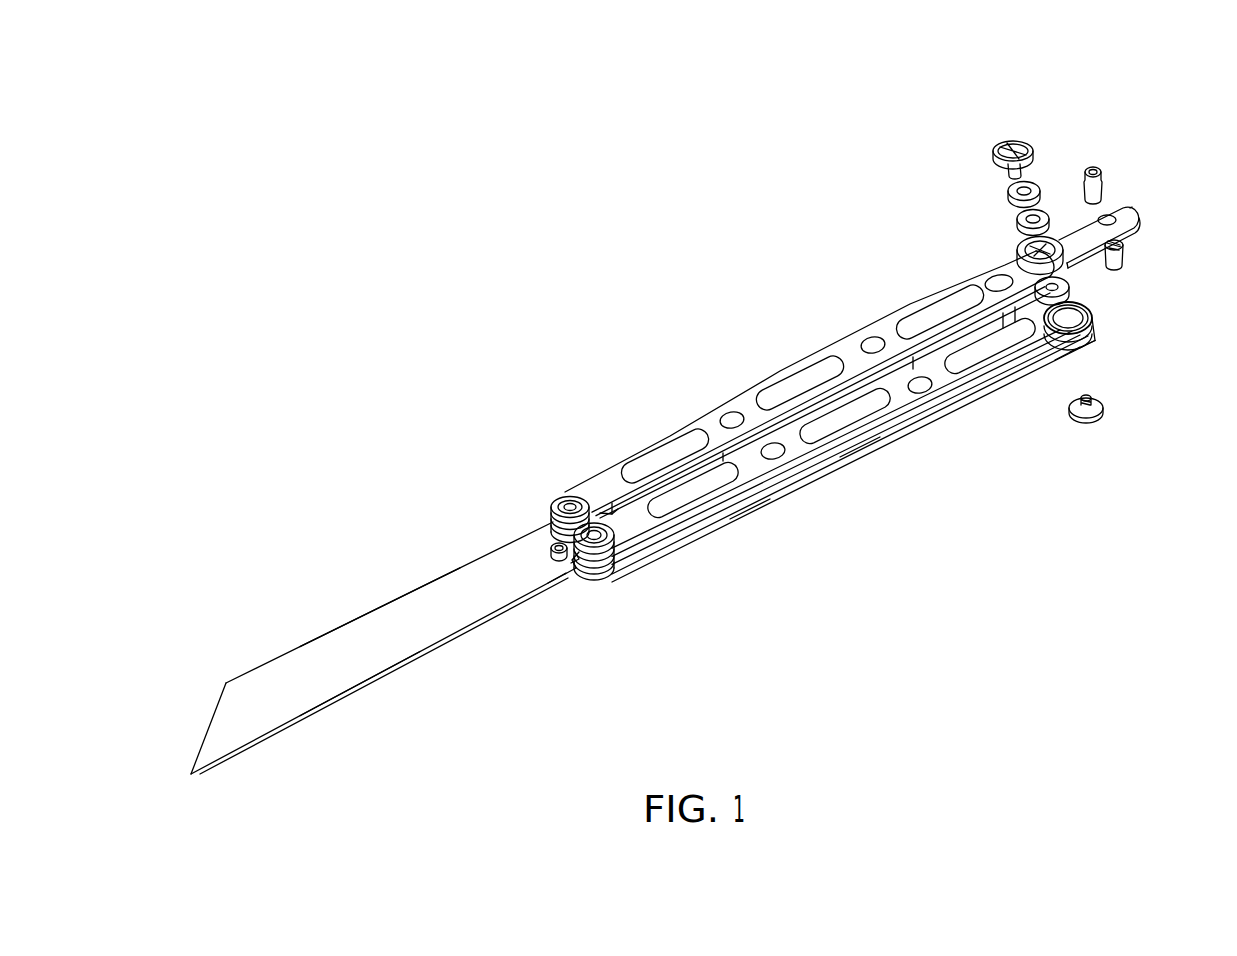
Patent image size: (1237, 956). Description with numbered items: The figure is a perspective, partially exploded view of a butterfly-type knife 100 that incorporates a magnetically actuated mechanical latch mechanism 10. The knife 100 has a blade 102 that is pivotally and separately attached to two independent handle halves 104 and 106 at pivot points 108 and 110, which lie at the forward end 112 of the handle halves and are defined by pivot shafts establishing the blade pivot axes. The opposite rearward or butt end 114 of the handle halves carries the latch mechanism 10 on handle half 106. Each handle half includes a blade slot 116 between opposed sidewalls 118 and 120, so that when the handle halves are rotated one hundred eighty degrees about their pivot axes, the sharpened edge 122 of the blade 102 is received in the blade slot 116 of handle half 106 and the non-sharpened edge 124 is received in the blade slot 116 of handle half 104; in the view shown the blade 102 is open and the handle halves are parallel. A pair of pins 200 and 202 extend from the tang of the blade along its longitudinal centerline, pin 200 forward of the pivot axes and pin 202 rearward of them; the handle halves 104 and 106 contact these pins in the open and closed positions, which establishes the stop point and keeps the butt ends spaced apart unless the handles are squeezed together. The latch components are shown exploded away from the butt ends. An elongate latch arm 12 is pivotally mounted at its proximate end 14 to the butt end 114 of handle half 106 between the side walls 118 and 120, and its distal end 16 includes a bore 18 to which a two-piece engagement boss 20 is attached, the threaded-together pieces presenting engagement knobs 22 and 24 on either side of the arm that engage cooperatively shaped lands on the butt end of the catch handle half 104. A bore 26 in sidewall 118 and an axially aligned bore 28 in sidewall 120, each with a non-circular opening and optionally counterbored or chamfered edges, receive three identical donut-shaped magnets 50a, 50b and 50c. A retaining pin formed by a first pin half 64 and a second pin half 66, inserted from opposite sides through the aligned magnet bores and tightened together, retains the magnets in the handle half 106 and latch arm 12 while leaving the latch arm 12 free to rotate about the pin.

The magnetically actuated mechanical latch mechanism 10 is at (1012, 113).
The elongate latch arm 12 is at (1068, 233).
The proximate end 14 is at (1018, 254).
The distal end 16 is at (1138, 211).
The bore 18 is at (1112, 212).
The two piece engagement boss 20 is at (1091, 152).
The engagement knob 22 is at (1128, 266).
The engagement knob 24 is at (1098, 170).
The bore 26 is at (1092, 313).
The bore 28 is at (1068, 355).
The magnet 50a is at (1007, 190).
The magnet 50b is at (1016, 220).
The magnet 50c is at (1070, 288).
The first pin half 64 is at (1083, 425).
The second pin half 66 is at (1018, 140).
The knife 100 is at (661, 250).
The blade 102 is at (300, 662).
The handle half 104 is at (851, 353).
The handle half 106 is at (796, 452).
The pivot point 108 is at (571, 503).
The pivot point 110 is at (603, 540).
The forward end 112 is at (556, 618).
The rearward end 114 is at (1141, 376).
The blade slot 116 is at (858, 448).
The sidewall 118 is at (753, 412).
The sidewall 120 is at (749, 510).
The sharpened edge 122 is at (345, 691).
The non-sharpened edge 124 is at (417, 587).
The pin 200 is at (551, 554).
The pin 202 is at (611, 505).